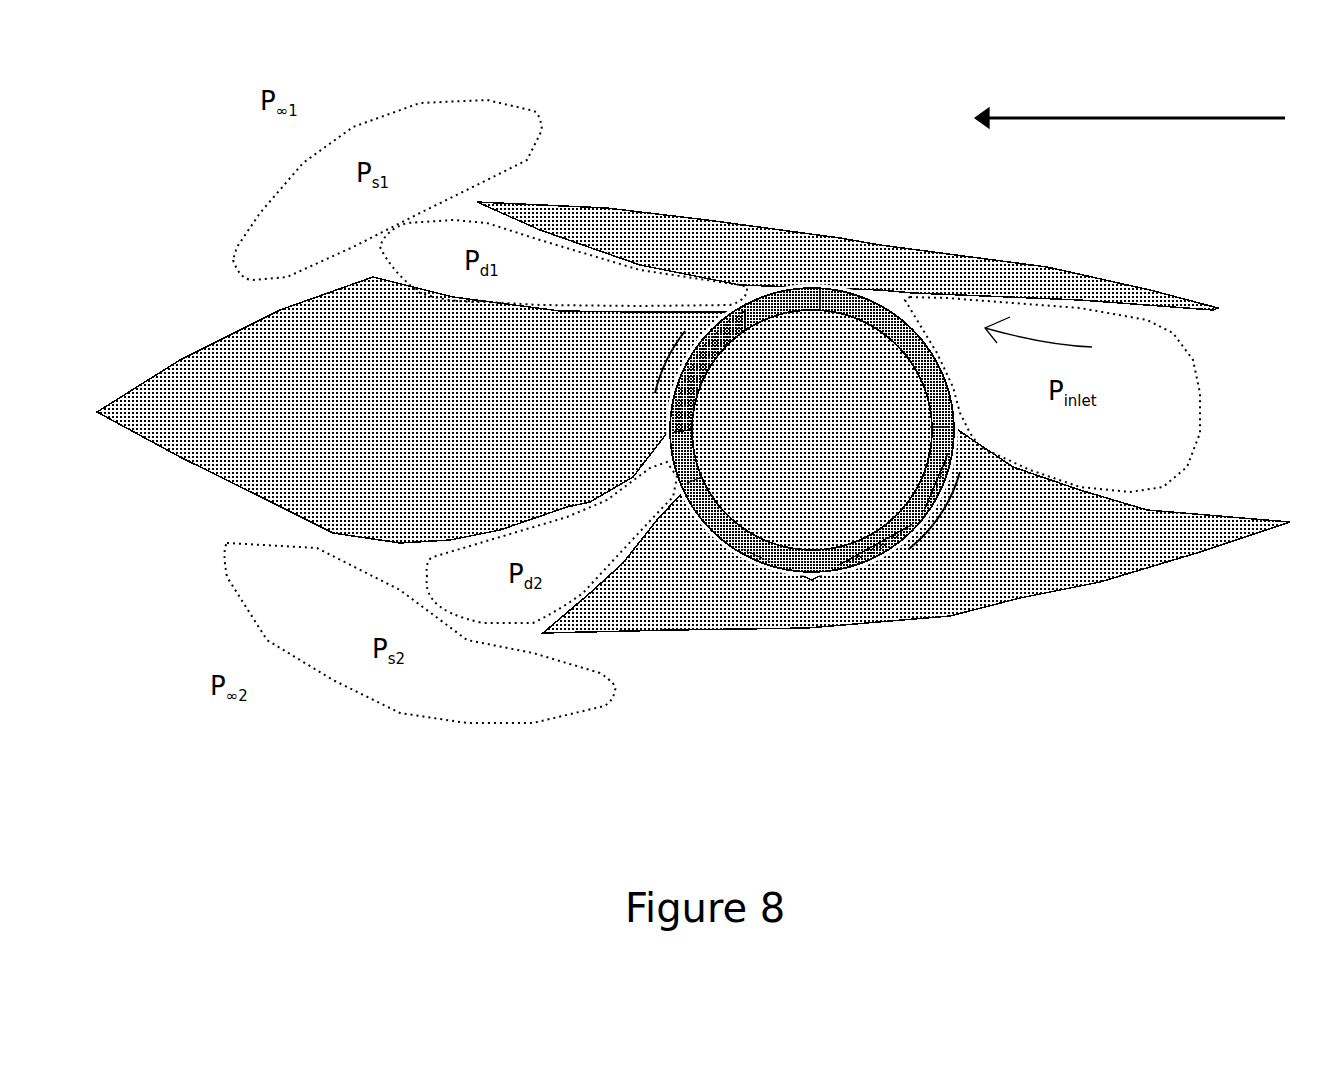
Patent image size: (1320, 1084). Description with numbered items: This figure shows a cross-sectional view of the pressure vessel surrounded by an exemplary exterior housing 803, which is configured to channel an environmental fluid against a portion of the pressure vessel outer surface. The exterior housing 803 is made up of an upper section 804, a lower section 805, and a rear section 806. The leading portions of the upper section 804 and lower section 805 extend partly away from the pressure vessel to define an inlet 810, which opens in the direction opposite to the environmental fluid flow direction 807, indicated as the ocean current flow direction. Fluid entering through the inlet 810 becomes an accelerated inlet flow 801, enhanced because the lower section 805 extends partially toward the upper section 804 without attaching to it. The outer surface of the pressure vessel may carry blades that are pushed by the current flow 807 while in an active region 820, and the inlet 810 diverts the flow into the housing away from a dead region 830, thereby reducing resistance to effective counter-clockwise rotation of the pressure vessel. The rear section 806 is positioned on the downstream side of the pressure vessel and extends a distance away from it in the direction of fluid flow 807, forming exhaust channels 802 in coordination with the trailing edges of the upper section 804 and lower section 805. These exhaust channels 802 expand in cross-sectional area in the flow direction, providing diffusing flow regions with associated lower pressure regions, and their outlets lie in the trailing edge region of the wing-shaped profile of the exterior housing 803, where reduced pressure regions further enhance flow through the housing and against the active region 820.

The accelerated inlet flow 801 is at (1071, 346).
The exhaust channels 802 is at (563, 421).
The exterior housing 803 is at (718, 155).
The upper section 804 is at (947, 272).
The lower section 805 is at (925, 593).
The rear section 806 is at (196, 462).
The environmental fluid flow direction 807 is at (1130, 114).
The inlet 810 is at (1091, 394).
The active region 820 is at (668, 357).
The dead region 830 is at (940, 515).